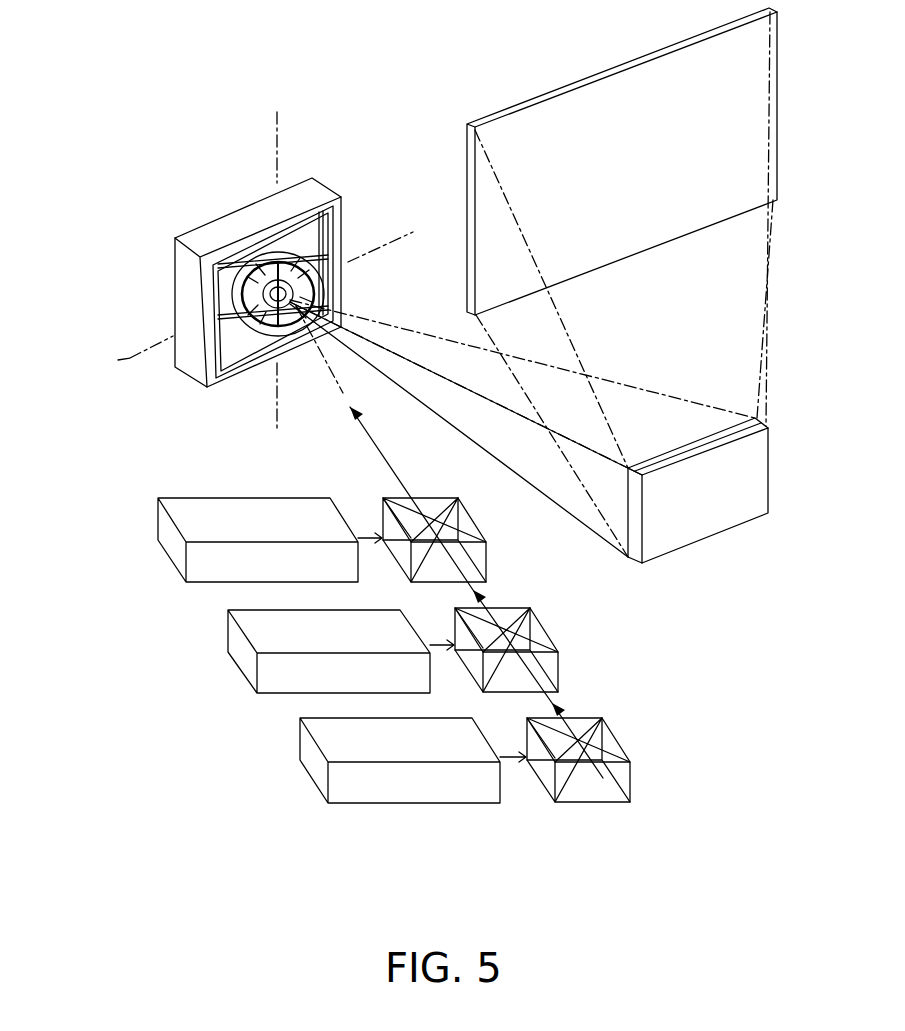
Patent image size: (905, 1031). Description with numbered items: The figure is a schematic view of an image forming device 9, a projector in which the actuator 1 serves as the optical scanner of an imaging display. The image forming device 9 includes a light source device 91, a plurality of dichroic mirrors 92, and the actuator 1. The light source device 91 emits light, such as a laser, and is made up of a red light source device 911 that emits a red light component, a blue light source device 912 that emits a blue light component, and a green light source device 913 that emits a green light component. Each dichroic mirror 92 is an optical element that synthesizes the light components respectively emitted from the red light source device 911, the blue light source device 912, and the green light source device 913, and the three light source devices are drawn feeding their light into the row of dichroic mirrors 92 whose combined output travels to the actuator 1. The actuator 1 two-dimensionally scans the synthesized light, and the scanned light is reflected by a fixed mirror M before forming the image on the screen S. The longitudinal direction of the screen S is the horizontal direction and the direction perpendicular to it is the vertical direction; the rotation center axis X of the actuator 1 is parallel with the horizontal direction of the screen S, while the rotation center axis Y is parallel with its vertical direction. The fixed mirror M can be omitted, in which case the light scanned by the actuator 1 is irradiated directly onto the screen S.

The image forming device 9 is at (112, 163).
The actuator 1 is at (166, 267).
The light source device 91 is at (167, 727).
The red light source device 911 is at (330, 732).
The blue light source device 912 is at (265, 630).
The green light source device 913 is at (198, 523).
The dichroic mirror 92 is at (482, 526).
The screen S is at (783, 133).
The fixed mirror M is at (750, 480).
The rotation center axis X is at (130, 357).
The rotation center axis Y is at (277, 127).